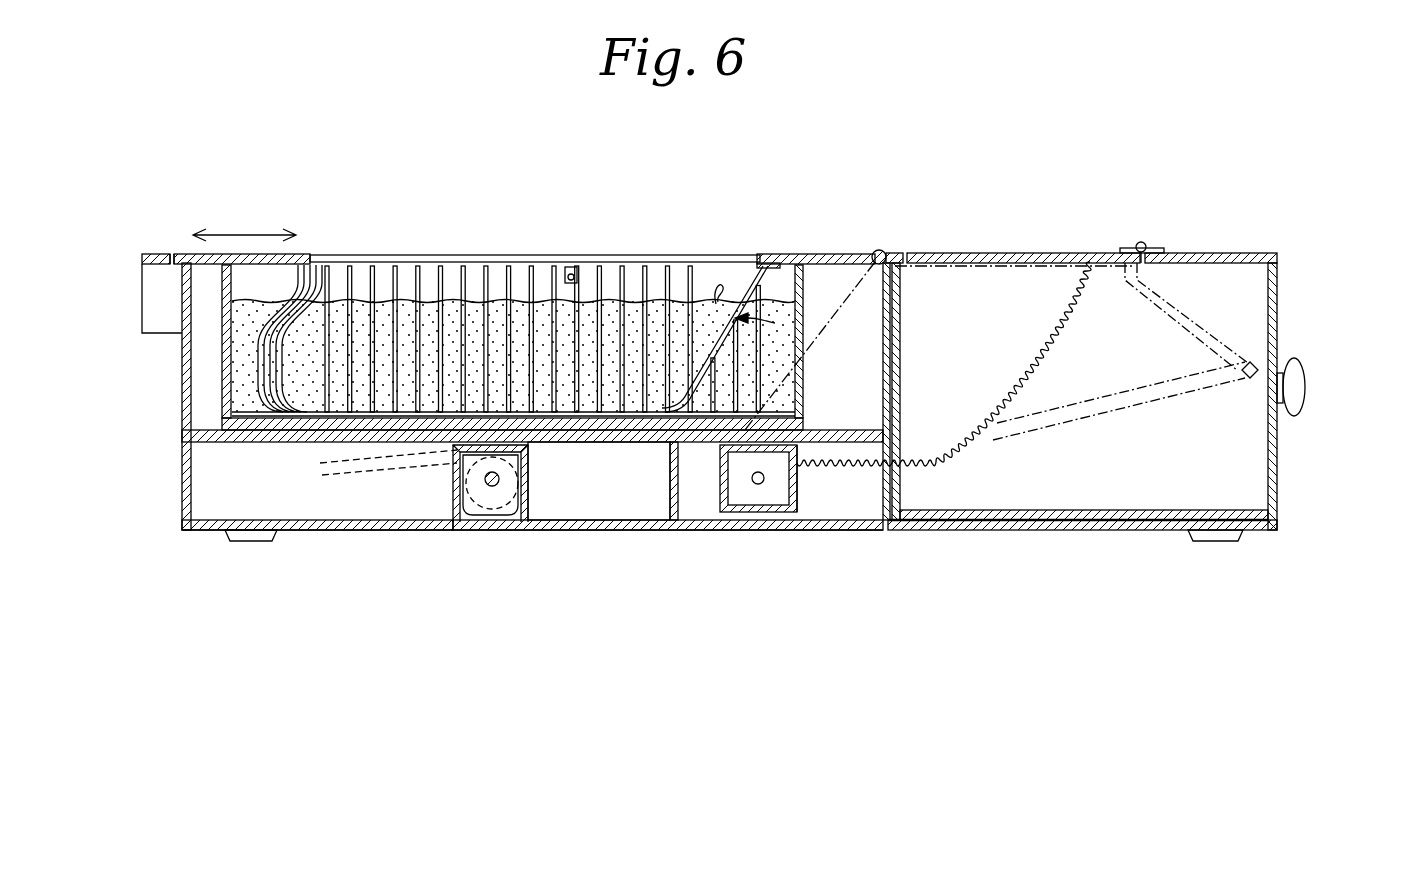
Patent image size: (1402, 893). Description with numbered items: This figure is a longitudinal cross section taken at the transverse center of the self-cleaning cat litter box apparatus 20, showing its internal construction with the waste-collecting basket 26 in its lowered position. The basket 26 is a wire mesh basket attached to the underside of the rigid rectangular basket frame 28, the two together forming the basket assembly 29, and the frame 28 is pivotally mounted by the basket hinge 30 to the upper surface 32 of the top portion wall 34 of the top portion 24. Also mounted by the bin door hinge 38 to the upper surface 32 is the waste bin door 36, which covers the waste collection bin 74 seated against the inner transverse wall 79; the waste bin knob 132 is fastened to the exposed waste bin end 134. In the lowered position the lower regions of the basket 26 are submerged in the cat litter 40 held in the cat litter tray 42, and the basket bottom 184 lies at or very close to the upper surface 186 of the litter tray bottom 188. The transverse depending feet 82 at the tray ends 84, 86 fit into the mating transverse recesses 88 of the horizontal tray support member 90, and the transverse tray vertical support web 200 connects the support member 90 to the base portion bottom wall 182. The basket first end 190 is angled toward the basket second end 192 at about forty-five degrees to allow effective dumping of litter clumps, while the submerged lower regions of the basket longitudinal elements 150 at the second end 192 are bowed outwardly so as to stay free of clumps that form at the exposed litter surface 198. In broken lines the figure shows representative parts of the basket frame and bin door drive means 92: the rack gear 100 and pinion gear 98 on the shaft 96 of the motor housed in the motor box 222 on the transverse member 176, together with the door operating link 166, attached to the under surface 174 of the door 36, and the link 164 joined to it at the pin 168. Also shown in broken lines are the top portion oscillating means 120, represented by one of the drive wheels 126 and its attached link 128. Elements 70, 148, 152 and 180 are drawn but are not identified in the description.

The self-cleaning cat litter box apparatus 20 is at (576, 185).
The top portion 24 is at (133, 310).
The waste-collecting basket 26 is at (283, 285).
The basket frame 28 is at (774, 253).
The basket assembly 29 is at (605, 247).
The basket hinge 30 is at (879, 248).
The upper surface 32 is at (1231, 252).
The top portion wall 34 is at (143, 258).
The waste bin door 36 is at (973, 252).
The bin door hinge 38 is at (1144, 242).
The cat litter 40 is at (780, 391).
The cat litter tray 42 is at (214, 346).
The partition wall 70 is at (925, 445).
The waste collection bin 74 is at (1288, 495).
The inner transverse wall 79 is at (866, 433).
The transverse depending feet 82 is at (276, 432).
The litter tray end 84 is at (222, 400).
The litter tray end 86 is at (806, 283).
The mating transverse recesses 88 is at (306, 418).
The horizontal tray support member 90 is at (336, 432).
The basket frame and bin door drive means 92 is at (815, 508).
The shaft 96 is at (757, 480).
The pinion gears 98 is at (768, 515).
The rack gear 100 is at (980, 463).
The top portion oscillating means 120 is at (508, 522).
The drive wheels 126 is at (477, 508).
The links 128 is at (357, 478).
The waste bin knob 132 is at (1305, 388).
The waste bin end 134 is at (1283, 468).
The sloped wall 148 is at (733, 222).
The basket longitudinal elements 150 is at (272, 418).
The grating bars 152 is at (413, 278).
The link 164 is at (1082, 412).
The door operating link 166 is at (1212, 330).
The pin 168 is at (1255, 363).
The under surface 174 is at (1040, 268).
The transverse member 176 is at (750, 516).
The bottom wall 180 is at (405, 516).
The base portion bottom wall 182 is at (597, 530).
The basket bottom 184 is at (441, 420).
The upper surface 186 is at (703, 445).
The litter tray bottom 188 is at (553, 430).
The basket first end 190 is at (757, 337).
The basket second end 192 is at (245, 323).
The exposed litter surface 198 is at (503, 312).
The transverse tray vertical support web 200 is at (683, 476).
The motor box 222 is at (823, 489).